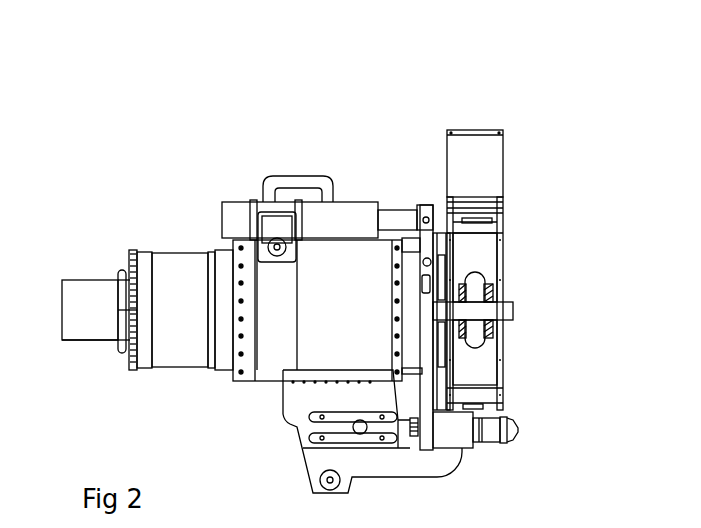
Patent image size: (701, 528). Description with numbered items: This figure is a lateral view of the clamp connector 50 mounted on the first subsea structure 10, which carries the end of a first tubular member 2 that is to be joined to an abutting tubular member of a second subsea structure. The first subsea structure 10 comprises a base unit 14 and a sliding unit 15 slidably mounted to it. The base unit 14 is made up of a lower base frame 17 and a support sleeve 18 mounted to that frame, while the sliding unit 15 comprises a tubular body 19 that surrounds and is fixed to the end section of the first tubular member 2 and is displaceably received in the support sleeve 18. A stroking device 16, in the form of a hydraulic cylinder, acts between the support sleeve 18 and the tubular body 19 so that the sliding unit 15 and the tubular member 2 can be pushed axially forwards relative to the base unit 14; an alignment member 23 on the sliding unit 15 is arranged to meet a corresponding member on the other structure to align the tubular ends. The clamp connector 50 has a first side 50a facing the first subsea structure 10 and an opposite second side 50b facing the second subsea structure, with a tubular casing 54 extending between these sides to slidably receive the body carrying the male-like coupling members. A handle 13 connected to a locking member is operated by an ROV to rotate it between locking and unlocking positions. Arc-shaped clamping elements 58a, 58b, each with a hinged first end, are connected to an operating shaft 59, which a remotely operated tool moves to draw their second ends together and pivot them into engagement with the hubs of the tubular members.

The first tubular member 2 is at (97, 288).
The first subsea structure 10 is at (203, 420).
The handle 13 is at (423, 262).
The base unit 14 is at (273, 423).
The sliding unit 15 is at (205, 238).
The stroking device 16 is at (347, 213).
The lower base frame 17 is at (297, 417).
The support sleeve 18 is at (378, 250).
The tubular body 19 is at (177, 362).
The alignment member 23 is at (488, 432).
The clamp connector 50 is at (482, 117).
The first side 50a is at (443, 207).
The second side 50b is at (505, 208).
The tubular casing 54 is at (483, 312).
The arc-shaped clamping element 58a is at (482, 253).
The arc-shaped clamping element 58b is at (488, 365).
The operating shaft 59 is at (473, 282).